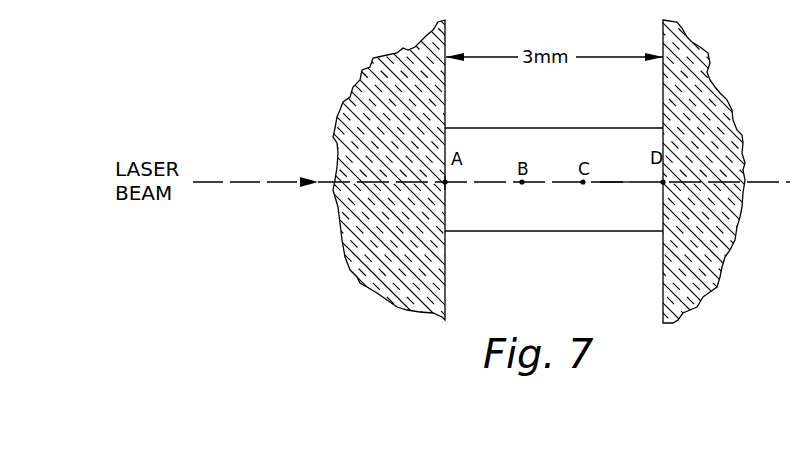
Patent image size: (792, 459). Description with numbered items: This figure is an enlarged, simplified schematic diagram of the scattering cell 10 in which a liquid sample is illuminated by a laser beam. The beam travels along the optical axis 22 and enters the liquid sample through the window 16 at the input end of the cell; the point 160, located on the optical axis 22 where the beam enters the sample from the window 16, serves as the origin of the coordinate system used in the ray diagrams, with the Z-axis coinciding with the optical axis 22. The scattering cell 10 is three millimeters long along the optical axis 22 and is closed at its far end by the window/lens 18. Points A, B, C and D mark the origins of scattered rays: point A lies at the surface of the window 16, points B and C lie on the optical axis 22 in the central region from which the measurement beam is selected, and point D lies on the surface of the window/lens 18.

The window 16 is at (367, 67).
The window/lens 18 is at (710, 63).
The scattering cell 10 is at (538, 243).
The point 160 is at (446, 186).
The optical axis 22 is at (613, 183).